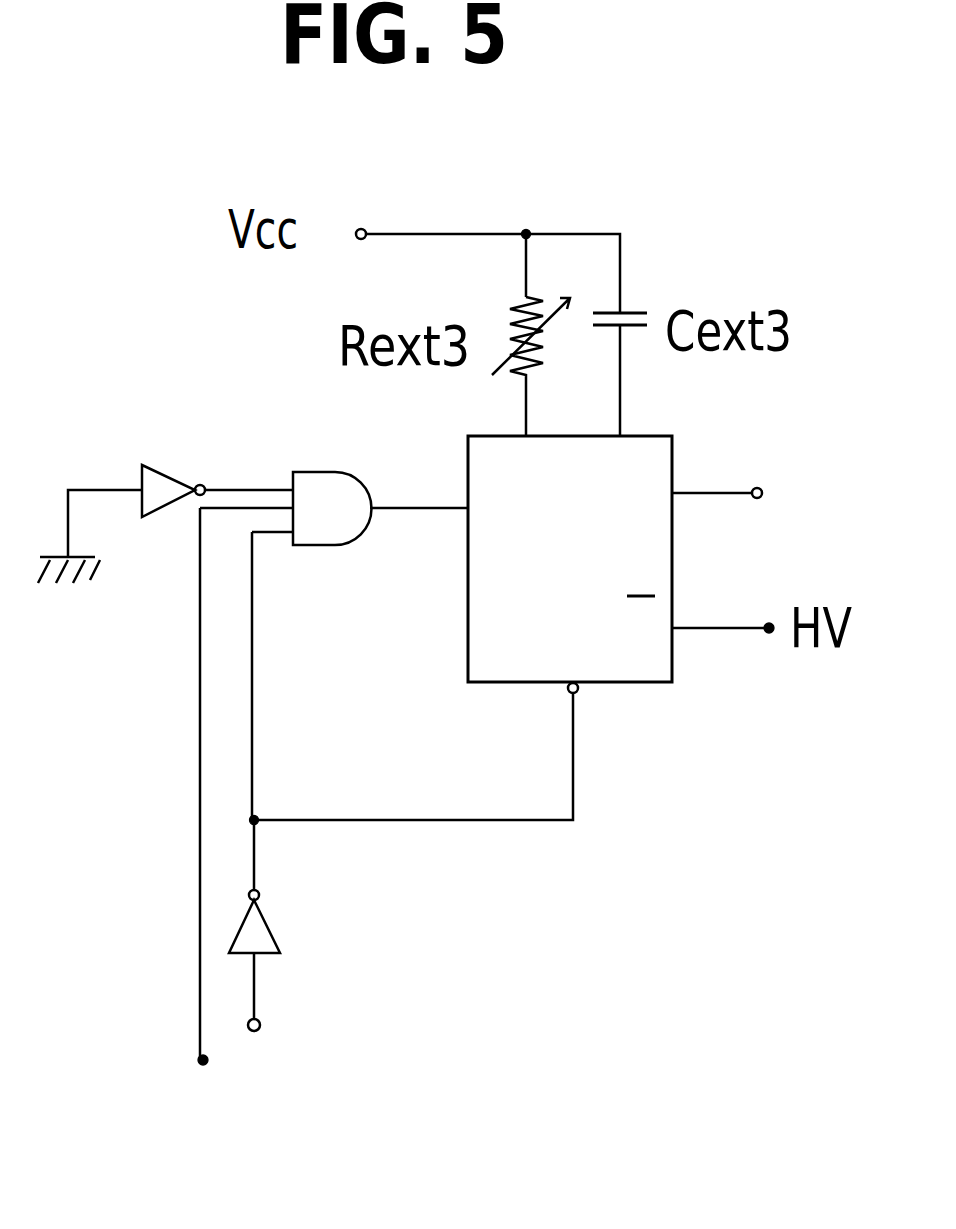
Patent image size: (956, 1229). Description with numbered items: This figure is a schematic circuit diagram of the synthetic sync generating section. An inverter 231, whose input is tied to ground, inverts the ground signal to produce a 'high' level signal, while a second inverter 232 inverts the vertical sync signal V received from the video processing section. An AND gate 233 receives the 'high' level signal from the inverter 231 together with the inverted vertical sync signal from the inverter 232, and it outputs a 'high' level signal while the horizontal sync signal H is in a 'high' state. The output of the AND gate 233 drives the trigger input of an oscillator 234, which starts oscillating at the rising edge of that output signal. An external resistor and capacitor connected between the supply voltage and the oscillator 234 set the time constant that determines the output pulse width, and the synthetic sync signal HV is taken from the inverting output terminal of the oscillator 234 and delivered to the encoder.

The inverter 231 is at (155, 490).
The inverter 232 is at (272, 930).
The AND gate 233 is at (333, 538).
The oscillator 234 is at (667, 458).